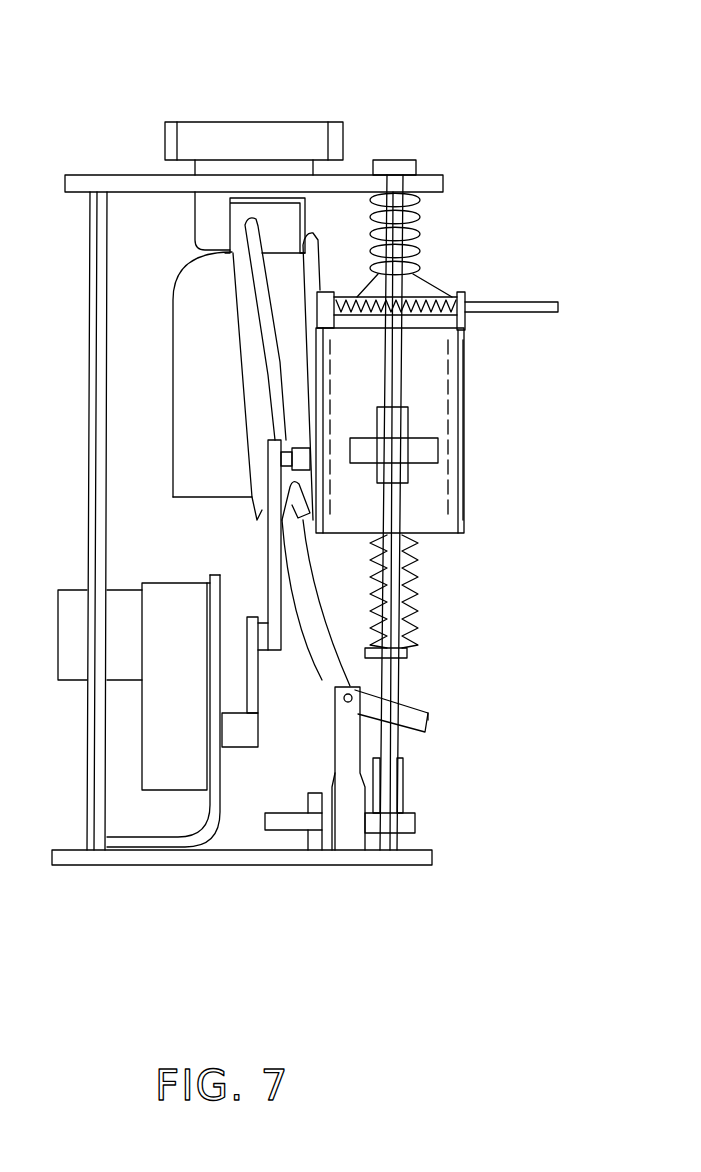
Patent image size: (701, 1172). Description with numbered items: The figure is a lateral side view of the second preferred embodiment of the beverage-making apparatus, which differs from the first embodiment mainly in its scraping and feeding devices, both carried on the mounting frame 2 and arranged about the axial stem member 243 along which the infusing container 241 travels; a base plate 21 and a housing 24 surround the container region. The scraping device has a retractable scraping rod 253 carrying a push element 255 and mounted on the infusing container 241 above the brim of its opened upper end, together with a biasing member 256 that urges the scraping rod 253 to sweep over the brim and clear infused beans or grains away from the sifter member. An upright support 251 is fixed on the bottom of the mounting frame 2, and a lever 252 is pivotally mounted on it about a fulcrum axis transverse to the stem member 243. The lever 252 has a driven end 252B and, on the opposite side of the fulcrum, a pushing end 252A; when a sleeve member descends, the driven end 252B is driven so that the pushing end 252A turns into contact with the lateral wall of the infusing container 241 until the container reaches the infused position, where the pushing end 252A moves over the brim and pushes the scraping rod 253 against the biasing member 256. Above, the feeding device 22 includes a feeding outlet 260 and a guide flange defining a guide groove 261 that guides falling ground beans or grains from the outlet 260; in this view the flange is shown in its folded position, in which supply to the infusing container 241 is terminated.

The mounting frame 2 is at (388, 80).
The base plate 21 is at (415, 857).
The feeding device 22 is at (150, 156).
The cylinder 24 is at (494, 432).
The infusing container 241 is at (465, 493).
The stem member 243 is at (410, 650).
The upright support 251 is at (342, 845).
The lever 252 is at (329, 629).
The pushing end 252A is at (292, 482).
The driven end 252B is at (418, 725).
The retractable scraping rod 253 is at (543, 300).
The push element 255 is at (335, 295).
The biasing member 256 is at (447, 294).
The feeding outlet 260 is at (275, 215).
The guide groove 261 is at (242, 290).